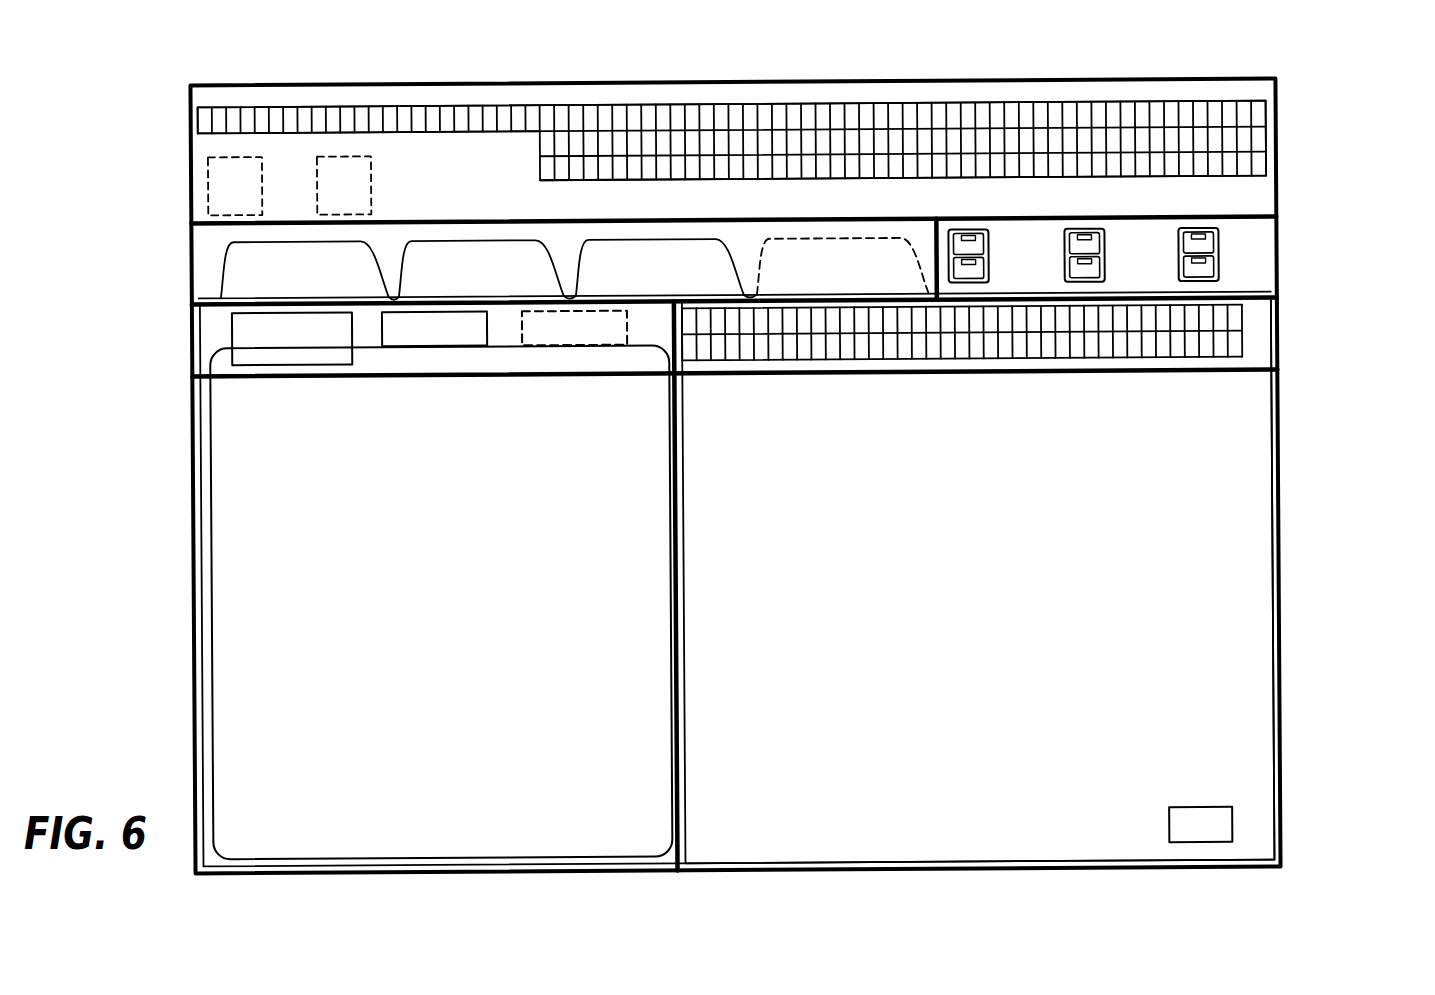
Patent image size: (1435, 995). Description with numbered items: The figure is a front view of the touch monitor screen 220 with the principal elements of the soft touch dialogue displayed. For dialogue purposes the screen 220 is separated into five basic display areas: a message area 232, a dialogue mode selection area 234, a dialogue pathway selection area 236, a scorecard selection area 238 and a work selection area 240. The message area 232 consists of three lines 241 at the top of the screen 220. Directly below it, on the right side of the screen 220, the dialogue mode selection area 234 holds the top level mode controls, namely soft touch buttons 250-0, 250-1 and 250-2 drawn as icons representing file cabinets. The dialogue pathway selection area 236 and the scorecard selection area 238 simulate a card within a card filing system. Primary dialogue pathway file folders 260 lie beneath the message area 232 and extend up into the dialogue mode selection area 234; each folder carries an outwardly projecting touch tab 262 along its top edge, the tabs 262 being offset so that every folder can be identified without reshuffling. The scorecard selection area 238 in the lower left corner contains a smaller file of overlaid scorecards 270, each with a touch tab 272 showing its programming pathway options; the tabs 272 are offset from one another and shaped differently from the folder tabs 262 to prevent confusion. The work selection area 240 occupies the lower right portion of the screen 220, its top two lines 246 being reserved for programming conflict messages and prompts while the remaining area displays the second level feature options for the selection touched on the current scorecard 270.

The screen 220 is at (952, 81).
The message area 232 is at (752, 116).
The lines 241 is at (1296, 99).
The dialogue pathway selection area 236 is at (430, 250).
The dialogue pathway file folders 260 is at (622, 247).
The touch tab 262 is at (258, 272).
The dialogue mode selection area 234 is at (1122, 241).
The soft touch button 250-0 is at (960, 242).
The soft touch button 250-1 is at (1085, 240).
The soft touch button 250-2 is at (1211, 235).
The programming conflict message lines 246 is at (1268, 338).
The touch tab 272 is at (258, 346).
The scorecards 270 is at (683, 543).
The scorecard selection area 238 is at (268, 657).
The work selection area 240 is at (1248, 600).